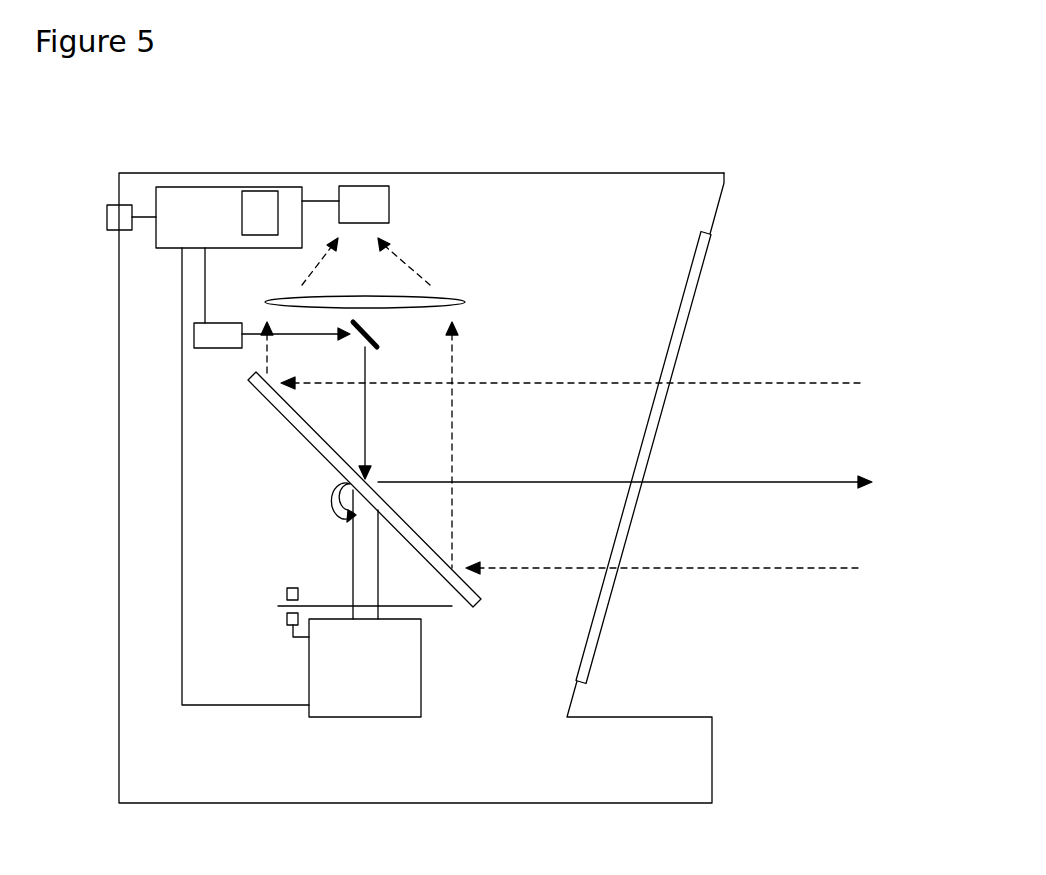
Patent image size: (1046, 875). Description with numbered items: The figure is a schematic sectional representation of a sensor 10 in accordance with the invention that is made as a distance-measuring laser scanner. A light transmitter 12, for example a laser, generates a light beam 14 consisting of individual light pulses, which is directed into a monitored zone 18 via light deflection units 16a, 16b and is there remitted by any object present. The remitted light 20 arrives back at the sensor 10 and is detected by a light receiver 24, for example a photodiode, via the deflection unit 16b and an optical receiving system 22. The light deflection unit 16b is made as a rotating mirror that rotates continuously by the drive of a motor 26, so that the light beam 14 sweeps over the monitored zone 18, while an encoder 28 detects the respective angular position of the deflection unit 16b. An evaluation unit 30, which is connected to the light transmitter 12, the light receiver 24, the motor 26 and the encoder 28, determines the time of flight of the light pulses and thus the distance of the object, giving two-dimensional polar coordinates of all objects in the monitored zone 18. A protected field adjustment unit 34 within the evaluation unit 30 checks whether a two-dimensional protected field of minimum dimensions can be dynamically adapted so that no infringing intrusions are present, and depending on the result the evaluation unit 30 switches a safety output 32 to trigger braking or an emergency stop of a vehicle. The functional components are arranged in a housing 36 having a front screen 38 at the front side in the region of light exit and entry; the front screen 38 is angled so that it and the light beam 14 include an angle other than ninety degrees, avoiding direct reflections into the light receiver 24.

The sensor 10 is at (778, 127).
The light transmitter 12 is at (207, 333).
The light beam 14 is at (735, 482).
The light deflection unit 16a is at (368, 332).
The light deflection unit 16b is at (328, 452).
The monitored zone 18 is at (920, 287).
The remitted light 20 is at (797, 383).
The optical receiving system 22 is at (438, 298).
The light receiver 24 is at (377, 199).
The motor 26 is at (415, 705).
The encoder 28 is at (288, 609).
The evaluation unit 30 is at (205, 187).
The safety output 32 is at (118, 210).
The protected field adjustment unit 34 is at (265, 200).
The housing 36 is at (712, 755).
The front screen 38 is at (598, 643).